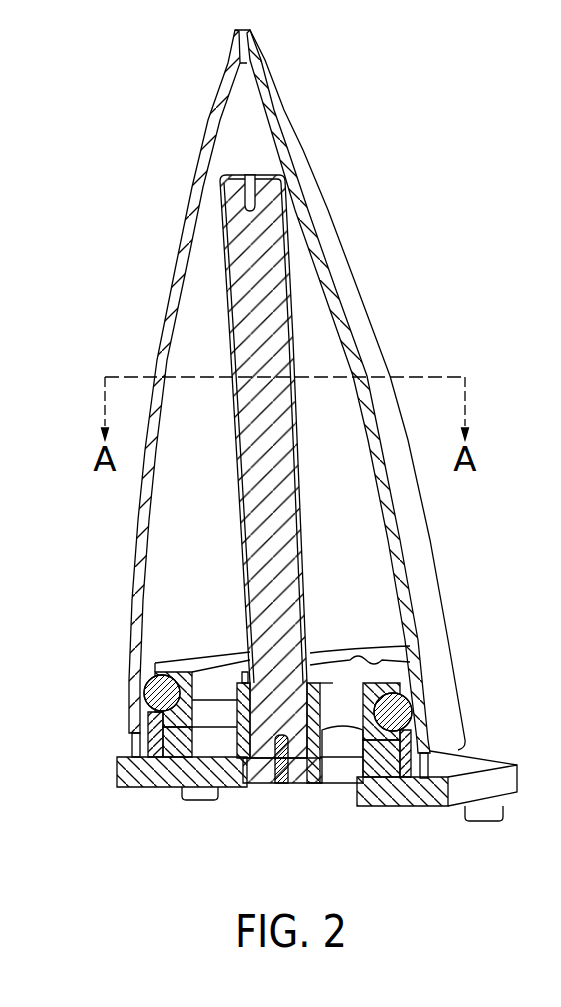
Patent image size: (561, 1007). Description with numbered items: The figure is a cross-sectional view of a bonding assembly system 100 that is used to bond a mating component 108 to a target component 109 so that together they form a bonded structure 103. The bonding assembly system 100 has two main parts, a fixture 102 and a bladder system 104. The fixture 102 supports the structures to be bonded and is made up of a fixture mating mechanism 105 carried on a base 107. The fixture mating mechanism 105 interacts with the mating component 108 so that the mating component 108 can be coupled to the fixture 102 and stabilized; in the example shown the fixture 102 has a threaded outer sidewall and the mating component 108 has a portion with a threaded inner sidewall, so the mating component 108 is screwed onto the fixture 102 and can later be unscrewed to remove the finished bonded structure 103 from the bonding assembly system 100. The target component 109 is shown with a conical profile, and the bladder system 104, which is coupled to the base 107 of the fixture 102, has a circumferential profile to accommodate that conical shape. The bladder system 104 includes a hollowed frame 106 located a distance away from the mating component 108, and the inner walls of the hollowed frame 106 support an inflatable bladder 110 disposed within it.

The bonding assembly system 100 is at (273, 802).
The fixture 102 is at (112, 767).
The bonded structure 103 is at (127, 207).
The bladder system 104 is at (187, 657).
The fixture mating mechanism 105 is at (138, 757).
The hollowed frame 106 is at (186, 716).
The base 107 is at (477, 769).
The mating component 108 is at (132, 745).
The target component 109 is at (137, 534).
The inflatable bladder 110 is at (155, 691).